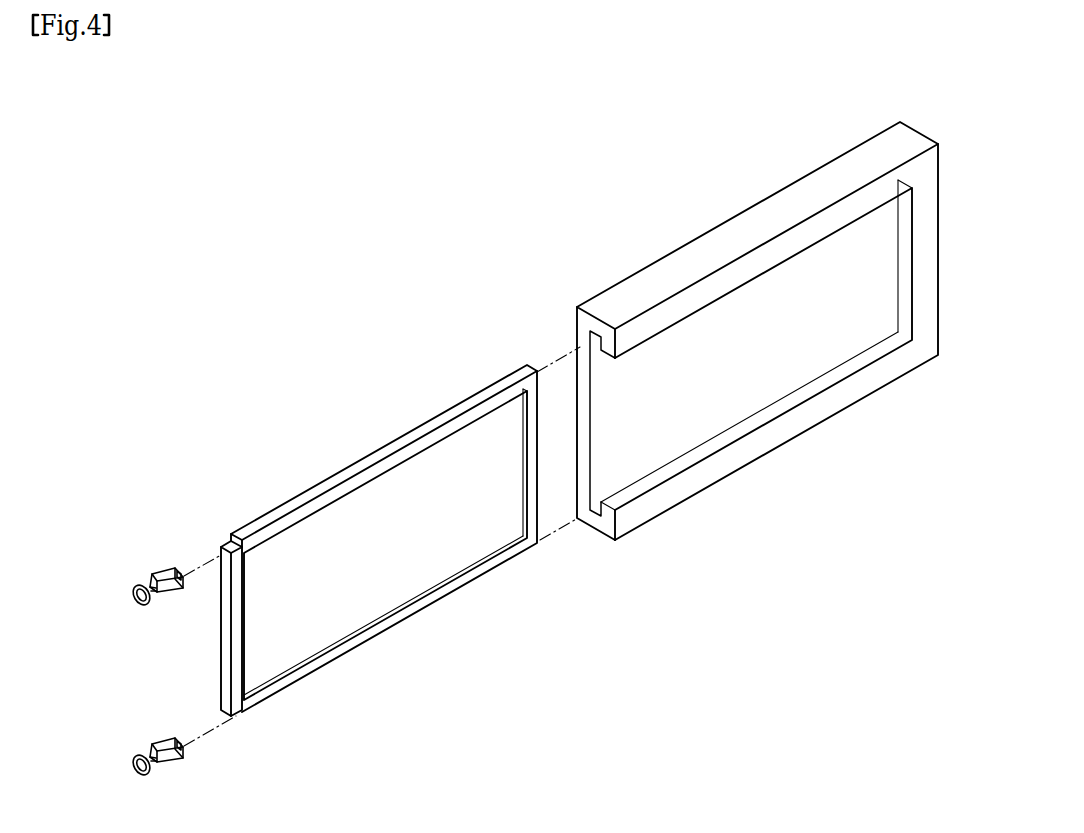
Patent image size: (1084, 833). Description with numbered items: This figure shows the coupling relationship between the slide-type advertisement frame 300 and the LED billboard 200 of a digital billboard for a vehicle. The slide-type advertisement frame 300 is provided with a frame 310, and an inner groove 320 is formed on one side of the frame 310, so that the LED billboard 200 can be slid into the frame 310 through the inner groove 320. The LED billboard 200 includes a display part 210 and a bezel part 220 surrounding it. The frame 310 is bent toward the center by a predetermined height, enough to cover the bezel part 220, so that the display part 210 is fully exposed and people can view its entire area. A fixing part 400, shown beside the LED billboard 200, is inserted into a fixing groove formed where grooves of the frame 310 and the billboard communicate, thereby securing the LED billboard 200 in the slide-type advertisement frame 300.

The LED billboard 200 is at (379, 511).
The display part 210 is at (305, 535).
The bezel part 220 is at (352, 470).
The slide-type advertisement frame 300 is at (738, 312).
The frame 310 is at (660, 273).
The inner groove 320 is at (588, 342).
The fixing part 400 is at (162, 577).